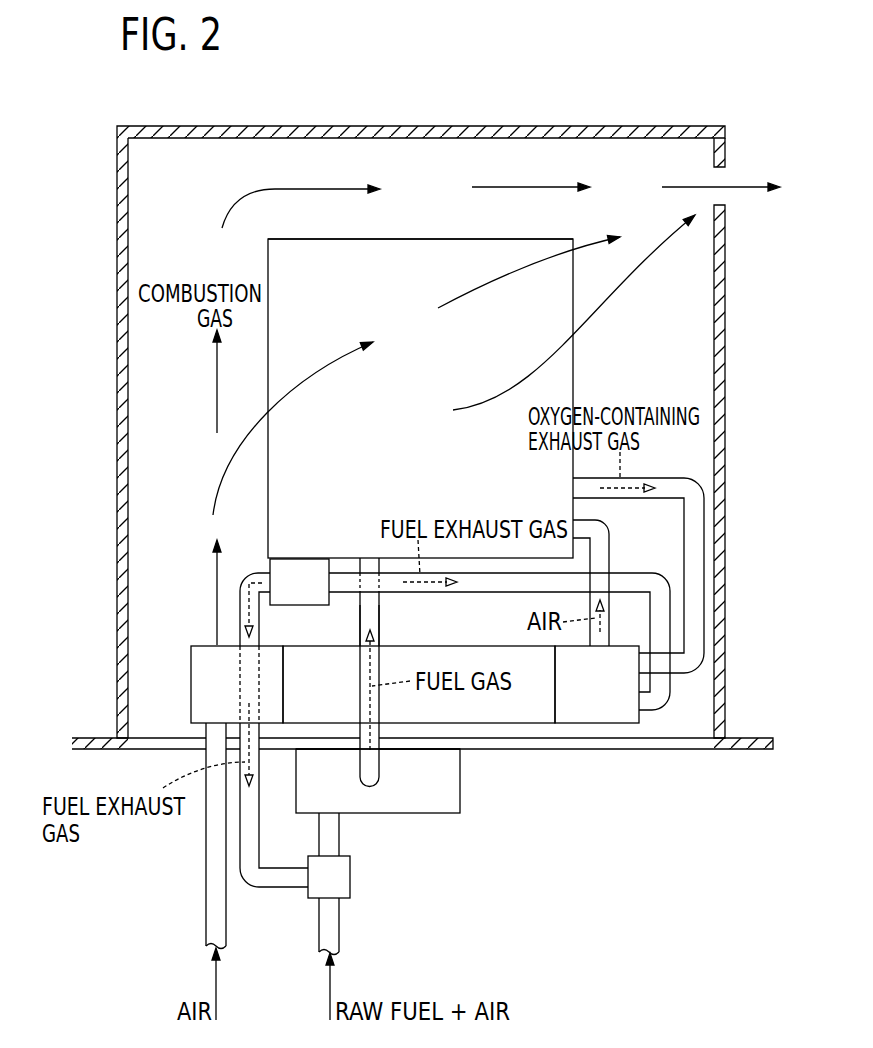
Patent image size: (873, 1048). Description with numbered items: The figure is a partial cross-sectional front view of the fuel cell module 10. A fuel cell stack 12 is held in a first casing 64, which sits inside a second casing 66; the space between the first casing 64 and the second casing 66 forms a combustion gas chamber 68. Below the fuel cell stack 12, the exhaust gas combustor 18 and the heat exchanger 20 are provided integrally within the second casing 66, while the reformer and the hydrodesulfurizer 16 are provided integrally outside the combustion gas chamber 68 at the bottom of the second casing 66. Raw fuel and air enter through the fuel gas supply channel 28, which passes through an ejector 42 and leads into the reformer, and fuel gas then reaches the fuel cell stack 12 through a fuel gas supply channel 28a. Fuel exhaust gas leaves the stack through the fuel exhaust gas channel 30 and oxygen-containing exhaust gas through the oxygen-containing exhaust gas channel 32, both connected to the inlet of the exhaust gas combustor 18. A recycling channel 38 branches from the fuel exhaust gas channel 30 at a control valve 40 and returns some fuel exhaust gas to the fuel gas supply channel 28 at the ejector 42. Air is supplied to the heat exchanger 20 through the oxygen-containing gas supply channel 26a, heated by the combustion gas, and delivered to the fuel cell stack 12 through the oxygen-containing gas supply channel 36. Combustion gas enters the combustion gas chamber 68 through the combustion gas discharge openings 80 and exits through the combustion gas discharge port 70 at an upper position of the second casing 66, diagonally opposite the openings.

The fuel cell module 10 is at (698, 56).
The fuel cell stack 12 is at (433, 229).
The hydrodesulfurizer 16 is at (444, 822).
The exhaust gas combustor 18 is at (591, 732).
The heat exchanger 20 is at (522, 732).
The oxygen-containing gas supply channel 26a is at (213, 870).
The fuel gas supply channel 28 is at (332, 835).
The fuel gas supply channel 28a is at (362, 612).
The fuel exhaust gas channel 30 is at (398, 590).
The oxygen-containing exhaust gas channel 32 is at (686, 506).
The oxygen-containing gas supply channel 36 is at (605, 556).
The recycling channel 38 is at (276, 880).
The control valve 40 is at (300, 570).
The ejector 42 is at (346, 888).
The first casing 64 is at (328, 247).
The second casing 66 is at (583, 128).
The combustion gas chamber 68 is at (126, 479).
The combustion gas discharge port 70 is at (722, 196).
The combustion gas discharge openings 80 is at (206, 644).